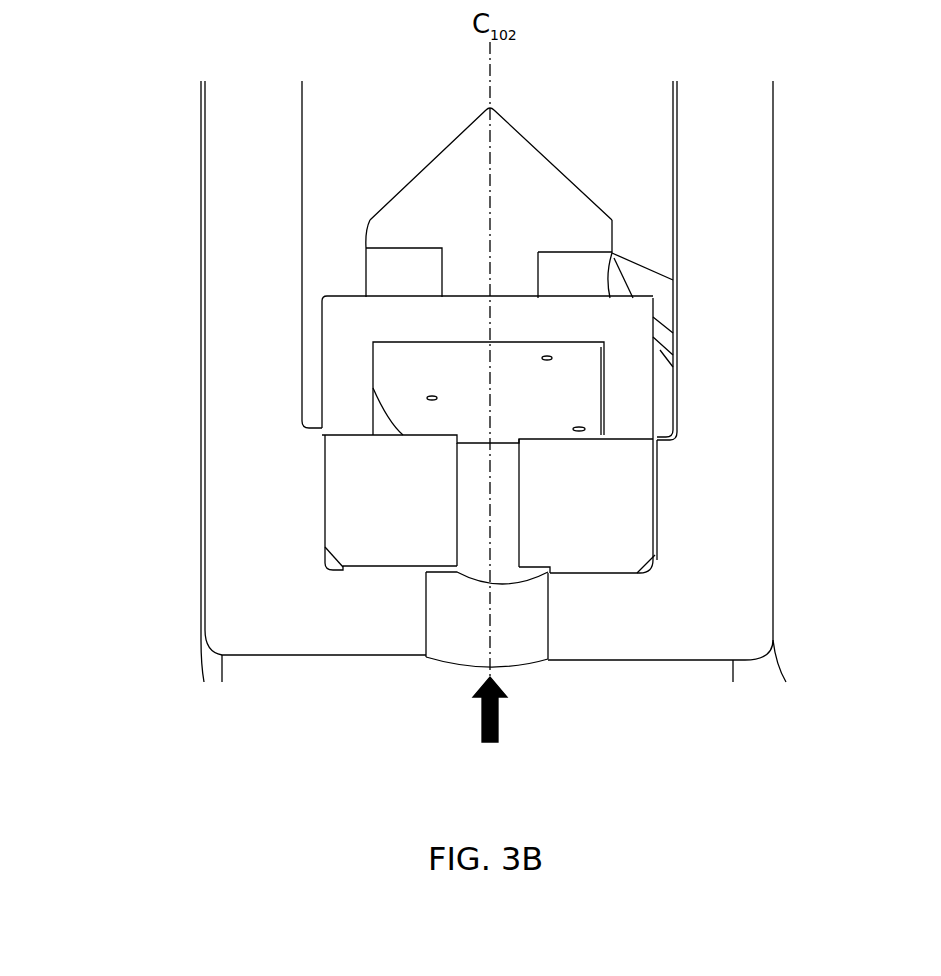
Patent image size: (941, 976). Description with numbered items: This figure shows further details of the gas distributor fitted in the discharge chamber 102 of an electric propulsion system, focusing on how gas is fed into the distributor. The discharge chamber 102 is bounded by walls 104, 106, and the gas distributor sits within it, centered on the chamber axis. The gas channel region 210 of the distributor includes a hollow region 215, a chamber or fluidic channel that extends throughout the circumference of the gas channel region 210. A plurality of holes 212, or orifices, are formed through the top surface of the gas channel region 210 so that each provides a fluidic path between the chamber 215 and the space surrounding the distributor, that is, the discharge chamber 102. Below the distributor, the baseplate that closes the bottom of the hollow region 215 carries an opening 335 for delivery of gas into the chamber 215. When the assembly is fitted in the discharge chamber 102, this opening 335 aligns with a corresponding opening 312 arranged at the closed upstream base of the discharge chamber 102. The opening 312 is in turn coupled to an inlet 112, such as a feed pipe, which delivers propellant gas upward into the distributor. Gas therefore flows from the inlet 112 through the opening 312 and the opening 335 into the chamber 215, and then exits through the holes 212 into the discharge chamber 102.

The discharge chamber 102 is at (632, 107).
The wall 104 is at (690, 170).
The wall 106 is at (290, 173).
The gas channel region 210 is at (341, 319).
The hollow region 215 is at (401, 377).
The holes 212 is at (454, 398).
The opening 335 is at (463, 502).
The opening 312 is at (465, 619).
The inlet 112 is at (493, 725).